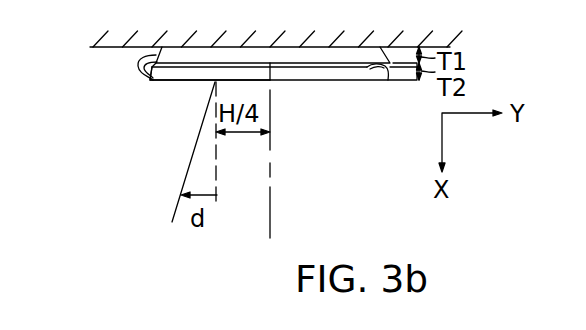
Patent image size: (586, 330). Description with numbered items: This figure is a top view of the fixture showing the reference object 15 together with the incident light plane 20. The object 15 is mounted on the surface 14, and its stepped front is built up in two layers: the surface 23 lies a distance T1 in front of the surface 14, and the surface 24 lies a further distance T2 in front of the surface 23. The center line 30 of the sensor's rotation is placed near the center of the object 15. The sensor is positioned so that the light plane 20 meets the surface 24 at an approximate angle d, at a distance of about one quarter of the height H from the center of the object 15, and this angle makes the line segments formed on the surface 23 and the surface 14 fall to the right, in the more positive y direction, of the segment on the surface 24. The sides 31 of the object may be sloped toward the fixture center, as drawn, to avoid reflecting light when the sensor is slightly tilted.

The surface 14 is at (109, 48).
The reference object 15 is at (305, 81).
The sides 31 is at (150, 61).
The surface 23 is at (387, 74).
The surface 24 is at (182, 81).
The light plane 20 is at (188, 171).
The center line 30 is at (271, 189).